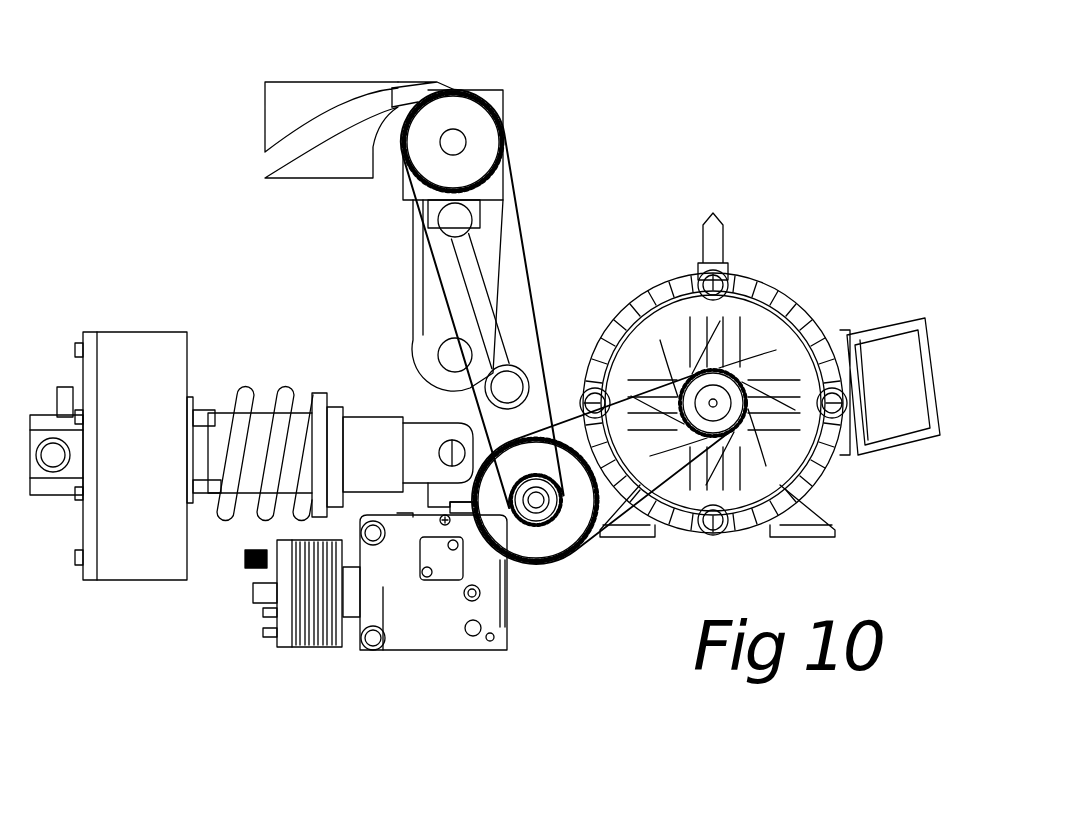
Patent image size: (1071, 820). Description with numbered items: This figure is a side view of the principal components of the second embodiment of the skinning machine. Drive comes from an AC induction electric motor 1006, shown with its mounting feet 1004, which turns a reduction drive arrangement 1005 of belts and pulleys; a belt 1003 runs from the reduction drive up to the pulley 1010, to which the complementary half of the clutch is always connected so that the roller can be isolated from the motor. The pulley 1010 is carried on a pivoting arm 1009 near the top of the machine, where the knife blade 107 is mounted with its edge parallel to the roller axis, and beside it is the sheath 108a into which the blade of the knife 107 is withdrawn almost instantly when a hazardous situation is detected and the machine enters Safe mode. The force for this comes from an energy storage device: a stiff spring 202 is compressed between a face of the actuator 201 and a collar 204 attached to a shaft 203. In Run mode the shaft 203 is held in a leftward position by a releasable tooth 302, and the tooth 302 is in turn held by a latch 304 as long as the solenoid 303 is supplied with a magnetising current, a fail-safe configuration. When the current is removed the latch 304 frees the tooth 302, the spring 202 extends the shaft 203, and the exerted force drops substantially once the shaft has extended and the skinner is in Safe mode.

The sheath 108a is at (340, 82).
The knife blade 107 is at (430, 72).
The pulley 1010 is at (490, 145).
The belt 1003 is at (523, 247).
The pivot arm 1009 is at (415, 268).
The AC induction electric motor 1006 is at (778, 290).
The motor mount 1004 is at (650, 513).
The reduction drive arrangement 1005 is at (557, 537).
The actuator 201 is at (185, 332).
The spring 202 is at (238, 395).
The collar 204 is at (323, 390).
The shaft 203 is at (360, 427).
The tooth 302 is at (462, 513).
The solenoid 303 is at (310, 647).
The latch 304 is at (457, 650).